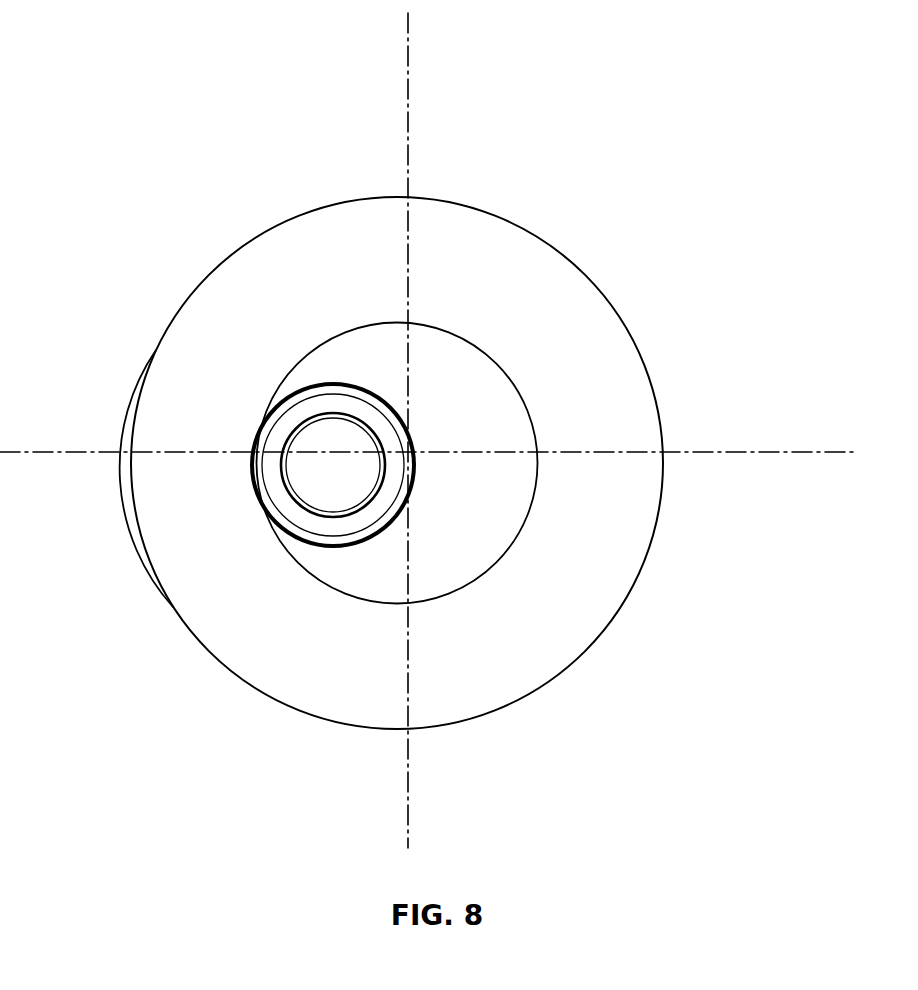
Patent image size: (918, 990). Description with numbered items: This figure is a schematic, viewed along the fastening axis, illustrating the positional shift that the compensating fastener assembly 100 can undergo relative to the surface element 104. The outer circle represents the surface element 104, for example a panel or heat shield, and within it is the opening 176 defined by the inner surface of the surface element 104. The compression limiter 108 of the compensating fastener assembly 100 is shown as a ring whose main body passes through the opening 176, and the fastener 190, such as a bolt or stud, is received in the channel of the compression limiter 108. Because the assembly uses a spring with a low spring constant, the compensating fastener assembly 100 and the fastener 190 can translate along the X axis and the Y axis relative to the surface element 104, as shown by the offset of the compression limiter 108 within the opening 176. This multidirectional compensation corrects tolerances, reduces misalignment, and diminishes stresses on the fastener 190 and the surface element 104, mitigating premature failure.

The compensating fastener assembly 100 is at (222, 365).
The surface element 104 is at (570, 554).
The opening 176 is at (447, 375).
The compression limiter 108 is at (313, 397).
The fastener 190 is at (325, 473).